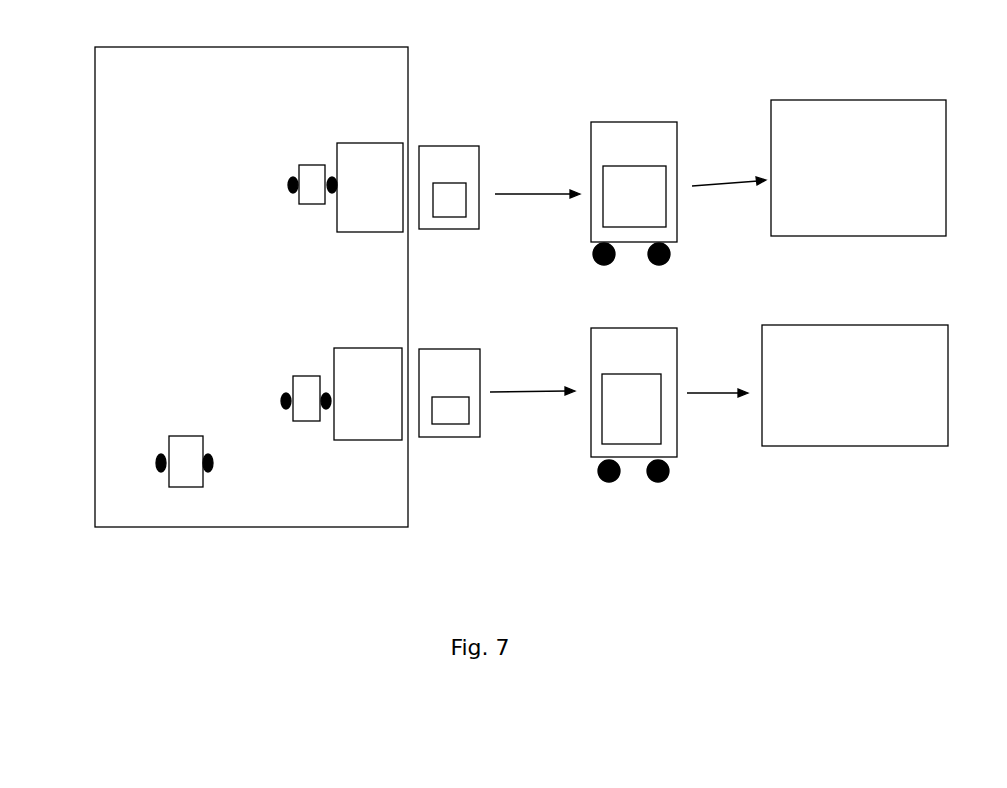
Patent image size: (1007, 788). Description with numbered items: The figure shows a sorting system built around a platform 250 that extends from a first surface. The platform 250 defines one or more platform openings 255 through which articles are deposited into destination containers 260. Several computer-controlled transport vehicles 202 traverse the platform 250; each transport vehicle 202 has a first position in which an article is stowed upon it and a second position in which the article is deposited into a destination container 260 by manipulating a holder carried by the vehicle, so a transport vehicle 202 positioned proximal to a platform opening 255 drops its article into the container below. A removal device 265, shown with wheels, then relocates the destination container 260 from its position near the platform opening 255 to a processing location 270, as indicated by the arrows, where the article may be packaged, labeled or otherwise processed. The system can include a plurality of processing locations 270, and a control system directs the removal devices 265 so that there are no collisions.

The transport vehicle 202 is at (316, 173).
The platform 250 is at (235, 94).
The platform opening 255 is at (350, 206).
The destination container 260 is at (431, 179).
The removal device 265 is at (616, 156).
The processing location 270 is at (841, 161).